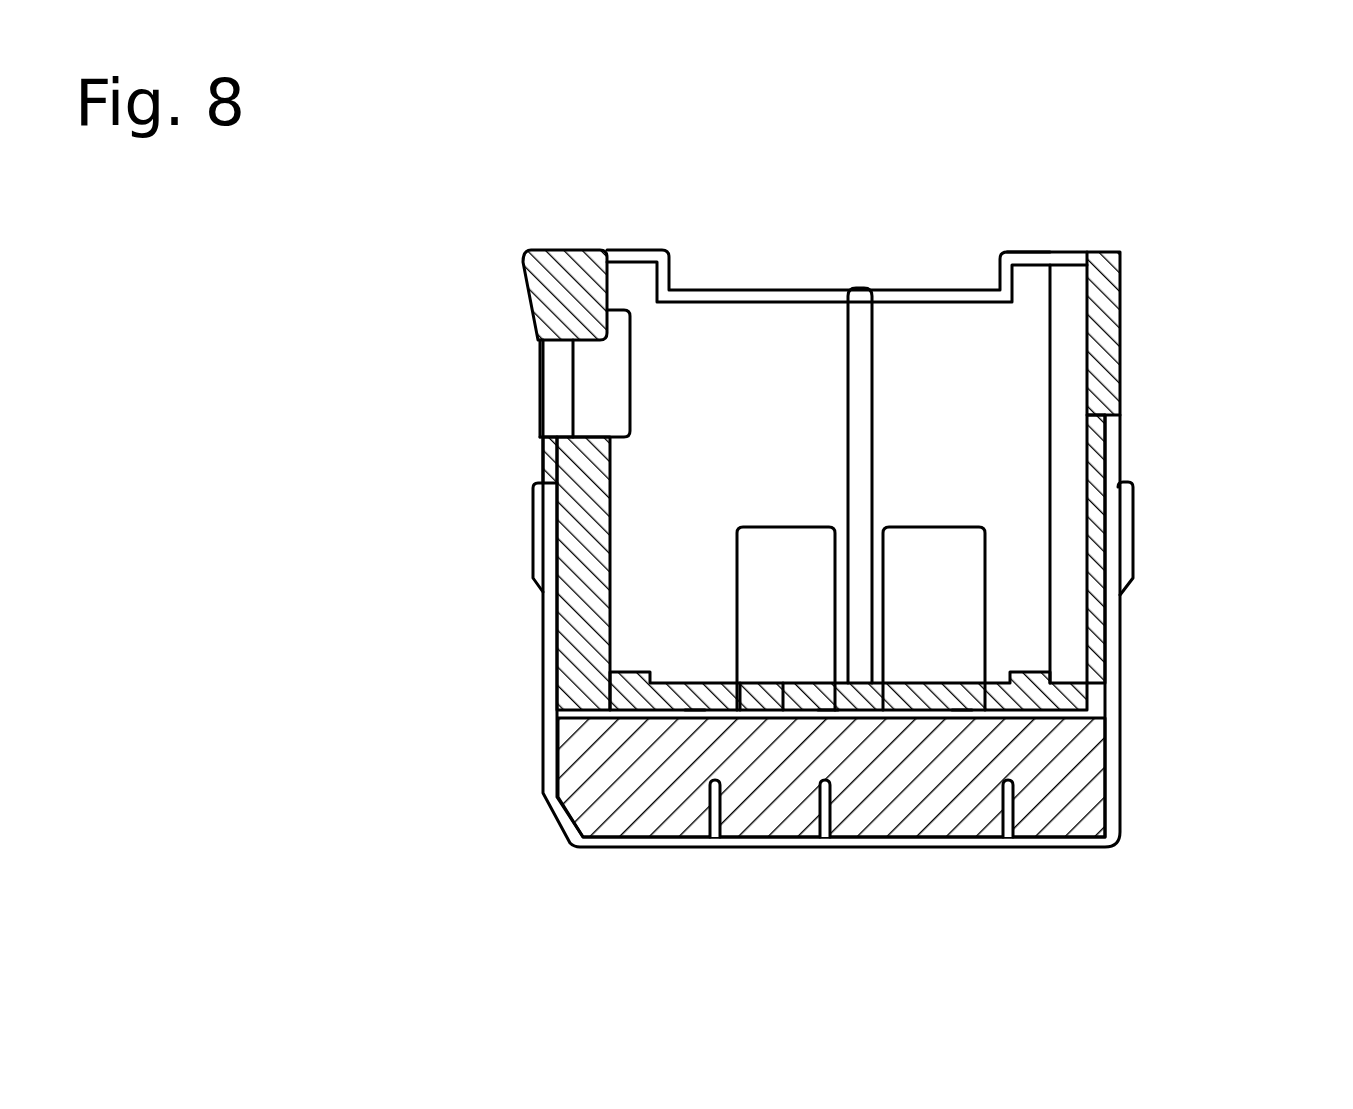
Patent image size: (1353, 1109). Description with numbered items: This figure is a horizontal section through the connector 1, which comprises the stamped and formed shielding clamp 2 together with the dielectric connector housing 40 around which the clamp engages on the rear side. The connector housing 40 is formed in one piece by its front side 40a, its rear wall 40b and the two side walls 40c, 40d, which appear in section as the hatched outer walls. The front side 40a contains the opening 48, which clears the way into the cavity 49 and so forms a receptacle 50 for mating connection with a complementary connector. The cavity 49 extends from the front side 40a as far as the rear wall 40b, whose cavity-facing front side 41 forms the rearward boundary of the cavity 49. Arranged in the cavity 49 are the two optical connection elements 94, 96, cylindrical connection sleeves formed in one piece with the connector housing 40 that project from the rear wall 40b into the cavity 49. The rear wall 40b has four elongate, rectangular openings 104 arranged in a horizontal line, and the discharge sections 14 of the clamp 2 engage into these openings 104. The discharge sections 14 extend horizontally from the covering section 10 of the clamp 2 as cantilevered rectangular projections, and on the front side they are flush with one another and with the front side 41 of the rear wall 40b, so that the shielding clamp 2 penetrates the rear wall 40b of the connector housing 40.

The connector 1 is at (1210, 272).
The shielding clamp 2 is at (1120, 607).
The covering section 10 is at (1085, 768).
The discharge sections 14 is at (627, 697).
The connector housing 40 is at (1120, 382).
The front side 40a is at (1028, 252).
The rear wall 40b is at (695, 700).
The side wall 40c is at (578, 530).
The side wall 40d is at (1095, 530).
The front side of the rear wall 41 is at (692, 666).
The opening 48 is at (787, 290).
The cavity 49 is at (702, 420).
The receptacle 50 is at (933, 347).
The optical connection element 94 is at (787, 522).
The optical connection element 96 is at (933, 522).
The openings 104 is at (650, 672).